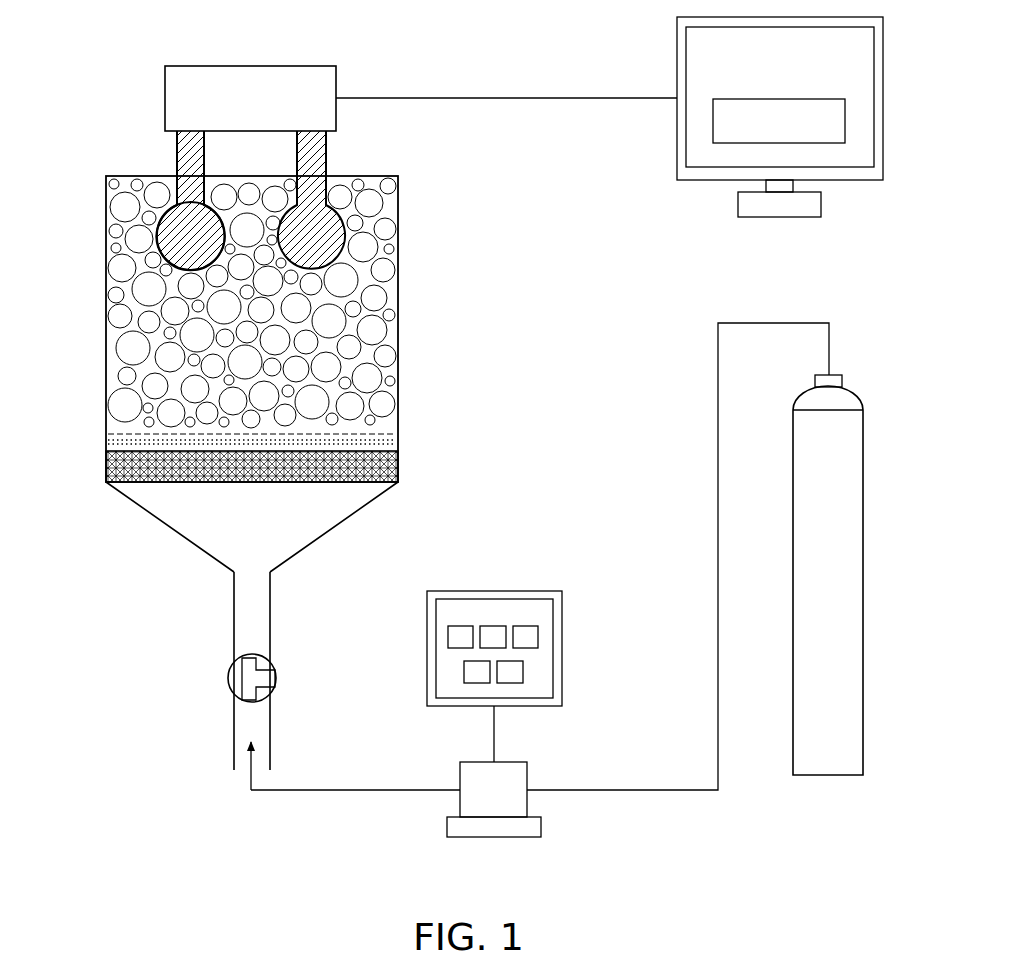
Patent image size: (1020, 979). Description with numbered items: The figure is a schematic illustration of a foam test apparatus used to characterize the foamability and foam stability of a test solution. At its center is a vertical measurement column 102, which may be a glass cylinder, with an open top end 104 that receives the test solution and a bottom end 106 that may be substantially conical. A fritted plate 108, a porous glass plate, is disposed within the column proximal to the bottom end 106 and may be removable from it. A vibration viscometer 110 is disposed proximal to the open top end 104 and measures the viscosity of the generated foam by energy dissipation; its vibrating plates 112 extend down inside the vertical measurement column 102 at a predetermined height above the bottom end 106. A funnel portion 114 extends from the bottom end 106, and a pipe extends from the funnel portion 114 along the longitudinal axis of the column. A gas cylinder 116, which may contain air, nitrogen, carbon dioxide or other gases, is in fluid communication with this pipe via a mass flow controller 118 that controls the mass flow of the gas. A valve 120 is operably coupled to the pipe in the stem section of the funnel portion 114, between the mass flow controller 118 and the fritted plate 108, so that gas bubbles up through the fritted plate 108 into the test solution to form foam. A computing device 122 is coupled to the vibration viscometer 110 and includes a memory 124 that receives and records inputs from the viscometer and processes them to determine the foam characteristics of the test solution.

The vertical measurement column 102 is at (414, 265).
The open top end 104 is at (131, 160).
The bottom end 106 is at (337, 506).
The fritted plate 108 is at (117, 472).
The vibration viscometer 110 is at (421, 98).
The vibrating plates 112 is at (190, 233).
The funnel portion 114 is at (254, 556).
The gas cylinder 116 is at (828, 575).
The mass flow controller 118 is at (494, 714).
The valve 120 is at (245, 678).
The computing device 122 is at (780, 117).
The memory 124 is at (779, 121).